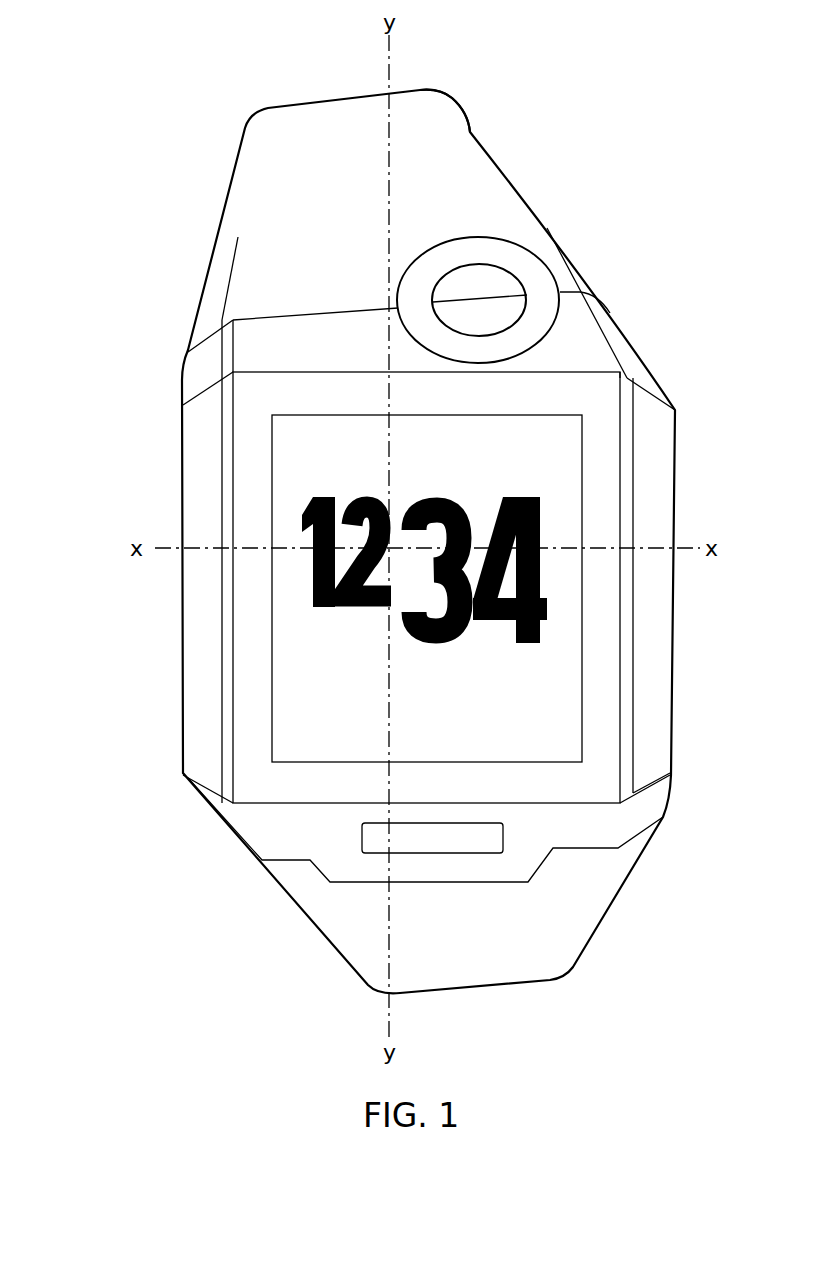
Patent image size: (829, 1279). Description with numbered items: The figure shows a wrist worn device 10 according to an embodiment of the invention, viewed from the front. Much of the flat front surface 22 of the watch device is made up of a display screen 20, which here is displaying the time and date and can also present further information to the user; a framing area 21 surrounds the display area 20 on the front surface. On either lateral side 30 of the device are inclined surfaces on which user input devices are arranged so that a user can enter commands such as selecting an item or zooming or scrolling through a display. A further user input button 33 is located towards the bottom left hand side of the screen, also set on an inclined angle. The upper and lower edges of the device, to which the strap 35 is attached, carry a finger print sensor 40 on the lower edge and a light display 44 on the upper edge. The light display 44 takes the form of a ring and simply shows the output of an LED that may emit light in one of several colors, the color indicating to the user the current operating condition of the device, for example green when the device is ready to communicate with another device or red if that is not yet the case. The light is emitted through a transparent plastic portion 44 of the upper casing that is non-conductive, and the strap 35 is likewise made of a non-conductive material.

The wearable electronic device 10 is at (612, 197).
The strap 35 is at (459, 104).
The light display 44 is at (424, 323).
The flat front surface 22 is at (621, 378).
The framing area 21 is at (597, 479).
The lateral side 30 is at (654, 641).
The display screen 20 is at (316, 690).
The user input button 33 is at (222, 817).
The finger print sensor 40 is at (412, 840).